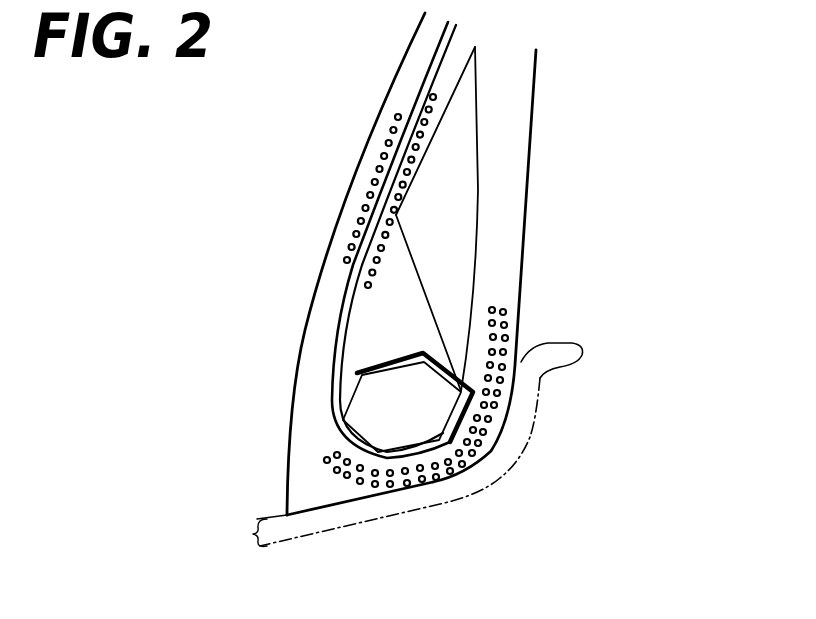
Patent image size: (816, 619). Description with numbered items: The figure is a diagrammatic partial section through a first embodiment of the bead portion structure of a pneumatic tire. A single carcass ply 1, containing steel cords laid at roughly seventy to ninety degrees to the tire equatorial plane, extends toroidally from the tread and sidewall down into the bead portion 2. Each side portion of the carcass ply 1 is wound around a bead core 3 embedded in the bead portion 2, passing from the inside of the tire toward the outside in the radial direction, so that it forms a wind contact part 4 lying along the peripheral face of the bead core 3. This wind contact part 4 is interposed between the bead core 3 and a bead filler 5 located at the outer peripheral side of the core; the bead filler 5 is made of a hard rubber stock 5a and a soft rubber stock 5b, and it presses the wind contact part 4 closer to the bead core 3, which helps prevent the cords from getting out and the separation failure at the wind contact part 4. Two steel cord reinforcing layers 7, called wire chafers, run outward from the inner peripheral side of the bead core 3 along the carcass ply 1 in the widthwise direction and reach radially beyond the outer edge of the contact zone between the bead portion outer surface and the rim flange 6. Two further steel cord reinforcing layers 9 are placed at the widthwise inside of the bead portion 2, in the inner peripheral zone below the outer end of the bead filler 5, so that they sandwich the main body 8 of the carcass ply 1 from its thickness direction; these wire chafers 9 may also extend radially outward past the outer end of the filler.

The carcass ply 1 is at (333, 333).
The bead portion 2 is at (541, 250).
The bead core 3 is at (425, 405).
The wind contact part 4 is at (430, 365).
The bead filler 5 is at (481, 179).
The hard rubber stock 5a is at (412, 305).
The soft rubber stock 5b is at (478, 142).
The rim flange 6 is at (532, 376).
The steel cord reinforcing layer (wire chafer) 7 is at (375, 473).
The main body of the carcass ply 8 is at (420, 95).
The steel cord reinforcing layer (wire chafer) 9 is at (387, 172).